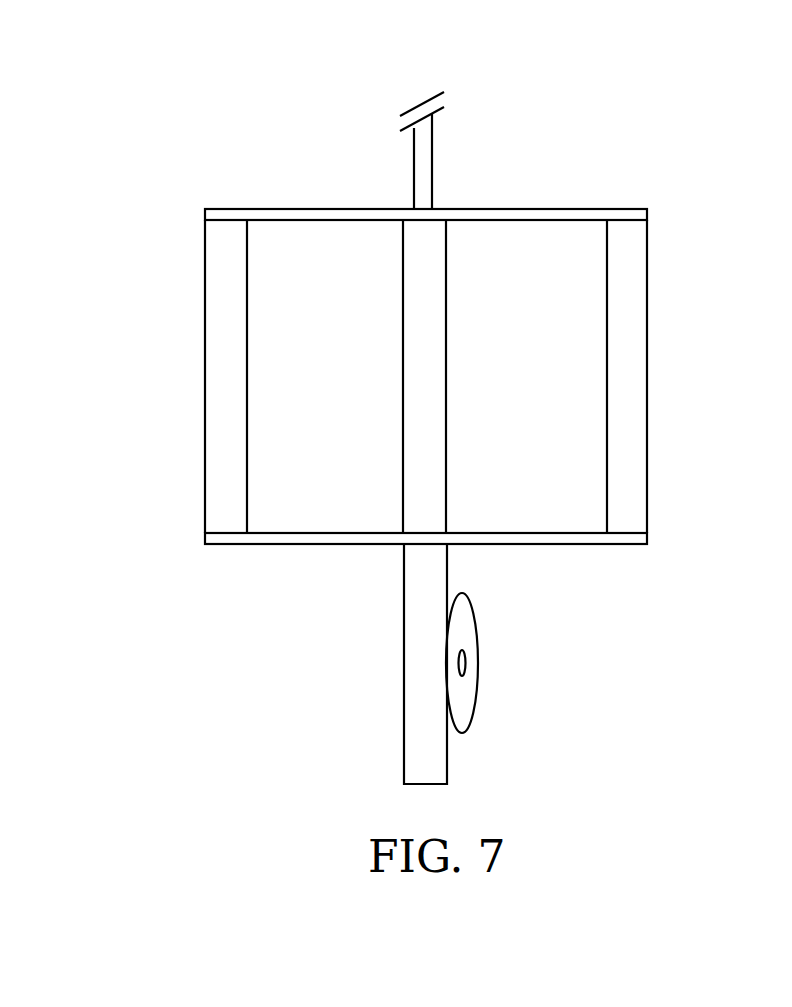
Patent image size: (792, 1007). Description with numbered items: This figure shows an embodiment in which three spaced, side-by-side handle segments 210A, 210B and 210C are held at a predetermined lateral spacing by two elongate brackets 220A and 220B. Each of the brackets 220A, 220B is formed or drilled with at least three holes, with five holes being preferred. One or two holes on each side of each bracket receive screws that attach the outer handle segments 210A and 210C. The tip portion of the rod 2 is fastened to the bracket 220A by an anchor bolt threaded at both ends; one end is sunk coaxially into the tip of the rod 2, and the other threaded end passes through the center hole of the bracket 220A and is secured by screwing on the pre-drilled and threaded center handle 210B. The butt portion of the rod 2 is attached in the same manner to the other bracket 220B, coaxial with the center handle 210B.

The rod 2 is at (434, 160).
The elongate bracket 220A is at (558, 209).
The elongate bracket 220B is at (558, 545).
The handle segment 210A is at (205, 383).
The center handle segment 210B is at (446, 362).
The handle segment 210C is at (647, 383).